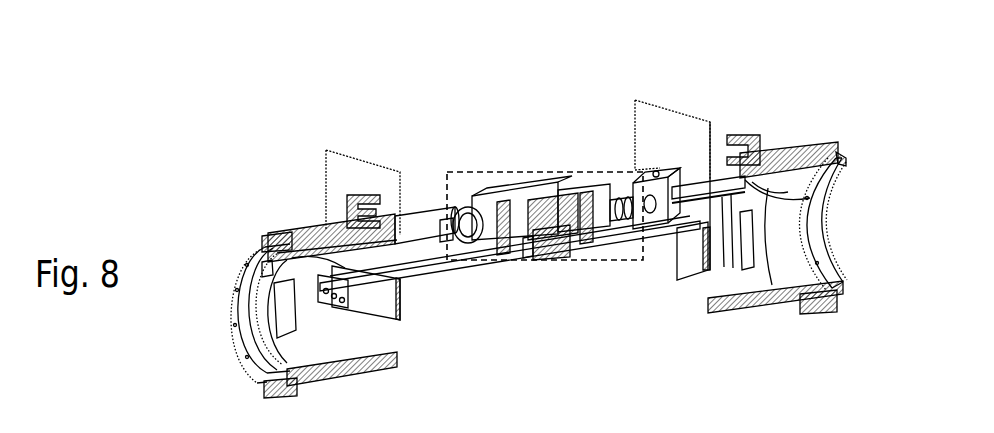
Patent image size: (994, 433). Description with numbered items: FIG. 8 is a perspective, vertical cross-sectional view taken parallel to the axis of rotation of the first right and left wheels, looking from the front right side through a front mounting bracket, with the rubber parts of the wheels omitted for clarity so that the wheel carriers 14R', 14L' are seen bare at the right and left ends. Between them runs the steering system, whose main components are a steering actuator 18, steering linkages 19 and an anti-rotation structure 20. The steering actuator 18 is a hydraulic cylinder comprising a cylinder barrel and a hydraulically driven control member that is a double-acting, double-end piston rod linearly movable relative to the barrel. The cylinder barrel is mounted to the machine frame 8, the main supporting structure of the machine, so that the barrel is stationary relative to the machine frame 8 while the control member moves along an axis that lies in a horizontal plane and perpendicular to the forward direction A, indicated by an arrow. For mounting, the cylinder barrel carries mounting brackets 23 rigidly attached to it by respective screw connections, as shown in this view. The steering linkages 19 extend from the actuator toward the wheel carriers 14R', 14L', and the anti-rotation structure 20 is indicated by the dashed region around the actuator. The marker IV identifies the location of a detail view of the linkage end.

The machine frame 8 is at (540, 212).
The right wheel mount 14R' is at (268, 283).
The left wheel mount 14L' is at (796, 191).
The steering actuator 18 is at (488, 222).
The steering linkages 19 is at (377, 255).
The anti-rotation structure 20 is at (591, 269).
The mounting brackets 23 is at (556, 228).
The detail view IV marker IV is at (642, 168).
The forward direction A is at (395, 338).